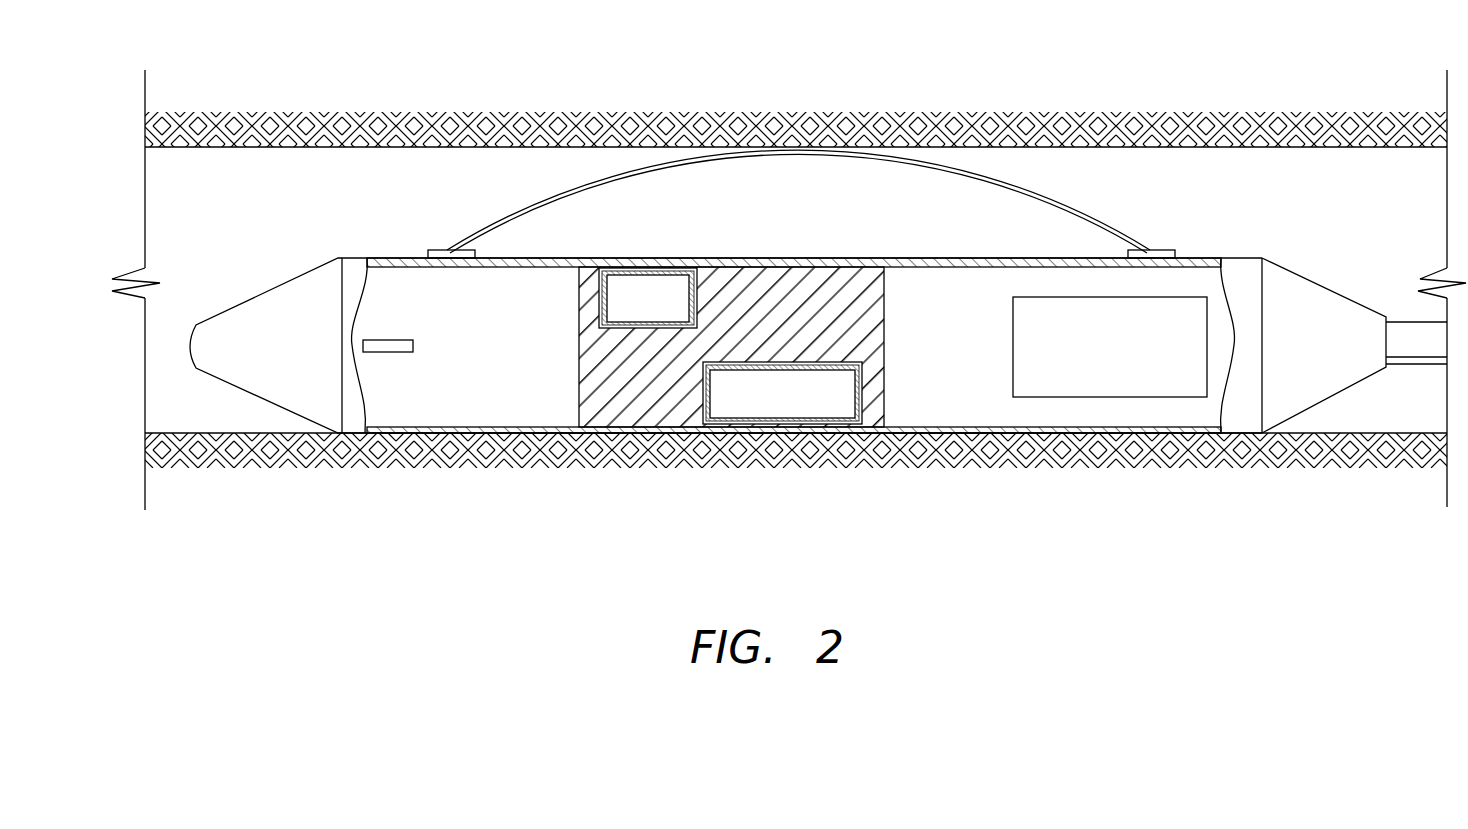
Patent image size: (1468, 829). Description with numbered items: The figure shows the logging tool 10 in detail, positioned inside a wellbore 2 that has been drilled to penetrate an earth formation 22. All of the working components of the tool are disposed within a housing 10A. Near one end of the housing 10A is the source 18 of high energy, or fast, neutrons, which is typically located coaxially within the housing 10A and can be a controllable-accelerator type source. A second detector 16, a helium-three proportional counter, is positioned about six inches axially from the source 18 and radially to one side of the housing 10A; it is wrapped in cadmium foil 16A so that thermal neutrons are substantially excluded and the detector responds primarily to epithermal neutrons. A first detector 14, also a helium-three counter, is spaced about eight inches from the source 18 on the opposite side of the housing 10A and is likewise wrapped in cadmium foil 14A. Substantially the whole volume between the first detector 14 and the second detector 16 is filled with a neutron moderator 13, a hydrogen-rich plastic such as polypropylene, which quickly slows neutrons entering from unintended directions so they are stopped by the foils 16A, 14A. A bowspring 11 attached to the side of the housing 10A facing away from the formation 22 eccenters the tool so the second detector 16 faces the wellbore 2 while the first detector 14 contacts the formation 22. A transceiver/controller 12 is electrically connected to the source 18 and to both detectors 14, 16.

The wellbore 2 is at (1203, 149).
The logging tool 10 is at (273, 258).
The housing 10A is at (967, 258).
The bowspring 11 is at (527, 205).
The transceiver/controller 12 is at (1013, 361).
The neutron moderator 13 is at (878, 307).
The first detector 14 is at (737, 397).
The cadmium foil 14A is at (808, 427).
The second detector 16 is at (625, 290).
The cadmium foil 16A is at (677, 268).
The source of high energy neutrons 18 is at (397, 340).
The earth formation 22 is at (837, 75).